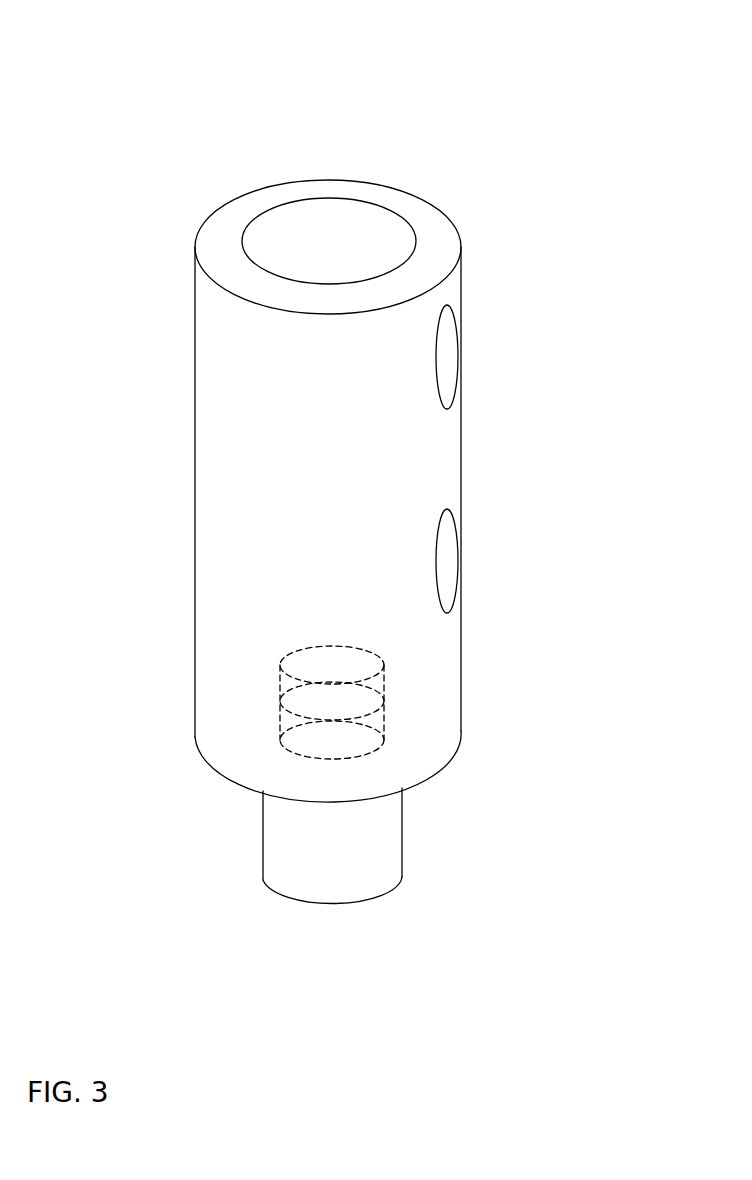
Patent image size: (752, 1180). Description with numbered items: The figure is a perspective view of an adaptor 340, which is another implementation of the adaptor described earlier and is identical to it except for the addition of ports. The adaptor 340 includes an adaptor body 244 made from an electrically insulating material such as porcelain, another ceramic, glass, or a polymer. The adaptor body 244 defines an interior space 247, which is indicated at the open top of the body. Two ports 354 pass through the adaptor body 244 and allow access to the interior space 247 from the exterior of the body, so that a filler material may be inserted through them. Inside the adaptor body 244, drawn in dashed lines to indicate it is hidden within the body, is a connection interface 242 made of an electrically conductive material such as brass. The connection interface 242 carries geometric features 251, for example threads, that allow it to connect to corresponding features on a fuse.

The adaptor 340 is at (129, 38).
The adaptor body 244 is at (442, 453).
The interior space 247 is at (351, 230).
The ports 354 is at (445, 366).
The connection interface 242 is at (384, 728).
The geometric features 251 is at (357, 756).